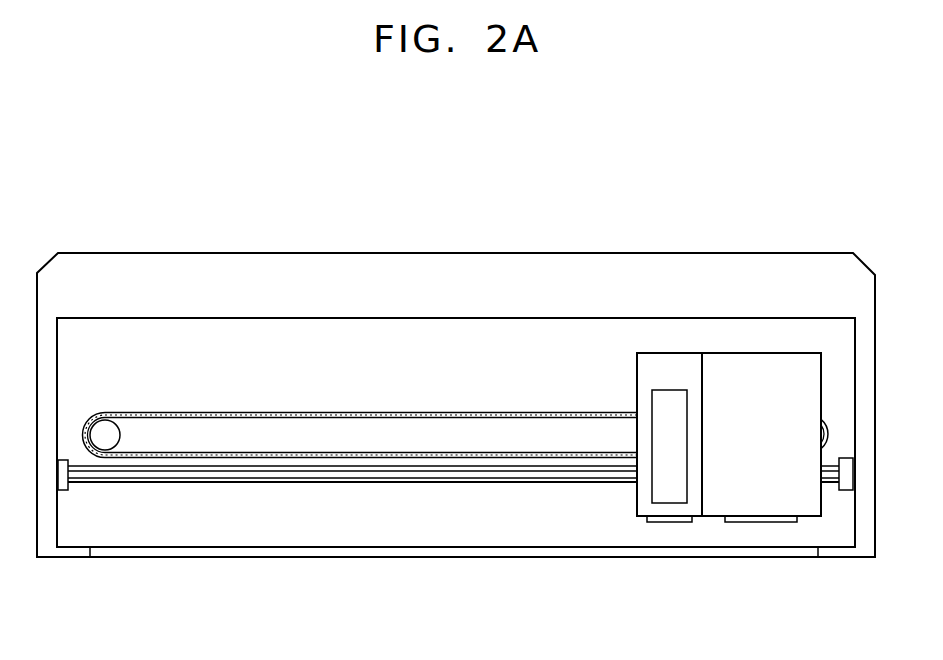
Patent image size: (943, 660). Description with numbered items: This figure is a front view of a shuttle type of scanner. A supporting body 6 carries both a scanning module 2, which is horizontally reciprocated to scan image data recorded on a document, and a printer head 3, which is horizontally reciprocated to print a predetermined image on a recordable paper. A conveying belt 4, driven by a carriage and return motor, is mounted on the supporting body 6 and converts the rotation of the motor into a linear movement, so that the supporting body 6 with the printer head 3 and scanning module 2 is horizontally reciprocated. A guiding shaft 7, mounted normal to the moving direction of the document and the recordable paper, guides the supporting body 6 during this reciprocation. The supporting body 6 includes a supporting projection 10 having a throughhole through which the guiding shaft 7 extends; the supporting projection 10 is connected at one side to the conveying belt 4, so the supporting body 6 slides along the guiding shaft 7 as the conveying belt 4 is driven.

The scanning module 2 is at (657, 362).
The printer head 3 is at (777, 361).
The conveying belt 4 is at (310, 411).
The supporting body 6 is at (722, 353).
The guiding shaft 7 is at (165, 473).
The supporting projection 10 is at (224, 557).